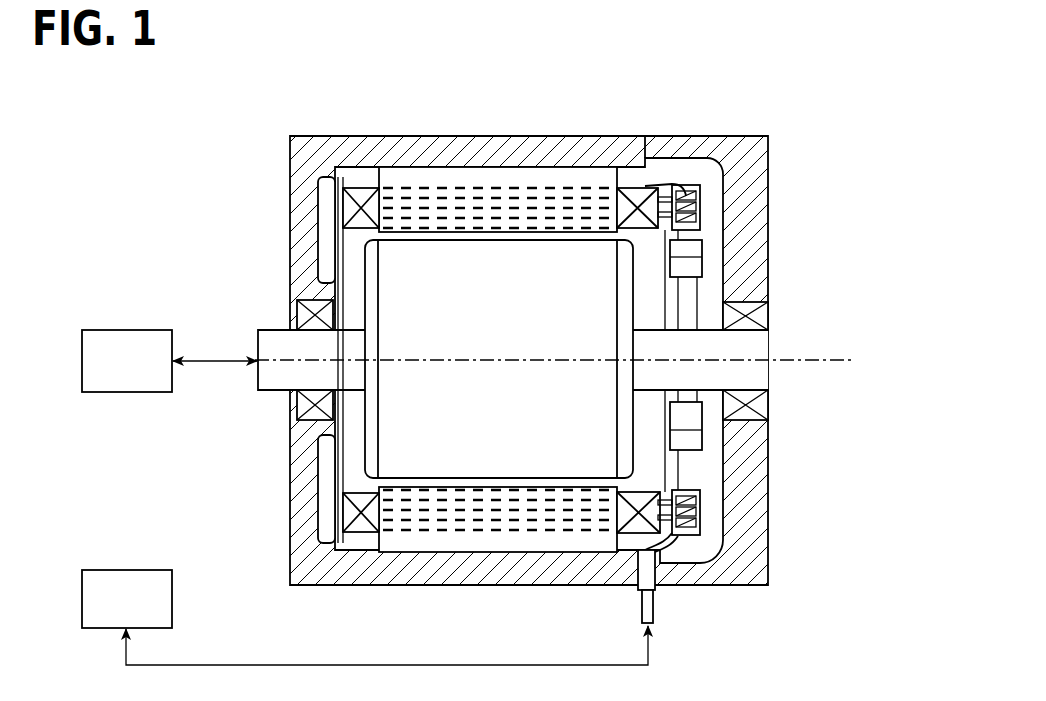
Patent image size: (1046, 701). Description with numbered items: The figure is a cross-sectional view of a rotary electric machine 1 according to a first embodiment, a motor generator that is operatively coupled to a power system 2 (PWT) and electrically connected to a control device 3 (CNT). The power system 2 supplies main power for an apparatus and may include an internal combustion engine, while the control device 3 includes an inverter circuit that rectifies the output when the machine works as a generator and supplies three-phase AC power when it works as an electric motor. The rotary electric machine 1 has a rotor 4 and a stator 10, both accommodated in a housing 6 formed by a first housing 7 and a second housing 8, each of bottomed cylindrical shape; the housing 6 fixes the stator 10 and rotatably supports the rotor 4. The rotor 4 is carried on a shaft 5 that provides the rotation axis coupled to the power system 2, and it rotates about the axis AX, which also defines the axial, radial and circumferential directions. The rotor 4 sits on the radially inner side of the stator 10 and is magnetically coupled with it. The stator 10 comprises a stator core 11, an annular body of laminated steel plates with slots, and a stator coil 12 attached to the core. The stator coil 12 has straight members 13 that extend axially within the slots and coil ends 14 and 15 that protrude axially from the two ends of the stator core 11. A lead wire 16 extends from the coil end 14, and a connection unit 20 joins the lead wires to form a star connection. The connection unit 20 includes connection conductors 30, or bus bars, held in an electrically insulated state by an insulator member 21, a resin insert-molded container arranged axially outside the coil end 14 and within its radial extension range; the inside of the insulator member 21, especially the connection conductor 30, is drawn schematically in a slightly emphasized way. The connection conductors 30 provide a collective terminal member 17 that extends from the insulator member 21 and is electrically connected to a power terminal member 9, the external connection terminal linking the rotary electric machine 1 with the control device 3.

The rotary electric machine 1 is at (815, 156).
The power system 2 is at (130, 330).
The control device 3 is at (130, 570).
The rotor 4 is at (365, 255).
The shaft 5 is at (264, 330).
The housing 6 is at (287, 437).
The first housing 7 is at (292, 527).
The second housing 8 is at (768, 530).
The power terminal member 9 is at (640, 606).
The stator 10 is at (336, 205).
The stator core 11 is at (410, 167).
The stator coil 12 is at (329, 196).
The straight member 13 is at (497, 195).
The coil end 14 is at (633, 188).
The coil end 15 is at (352, 188).
The lead wire 16 is at (652, 190).
The collective terminal member 17 is at (768, 587).
The connection unit 20 is at (705, 283).
The insulator member 21 is at (700, 210).
The connection conductor 30 is at (697, 203).
The axis AX is at (572, 349).